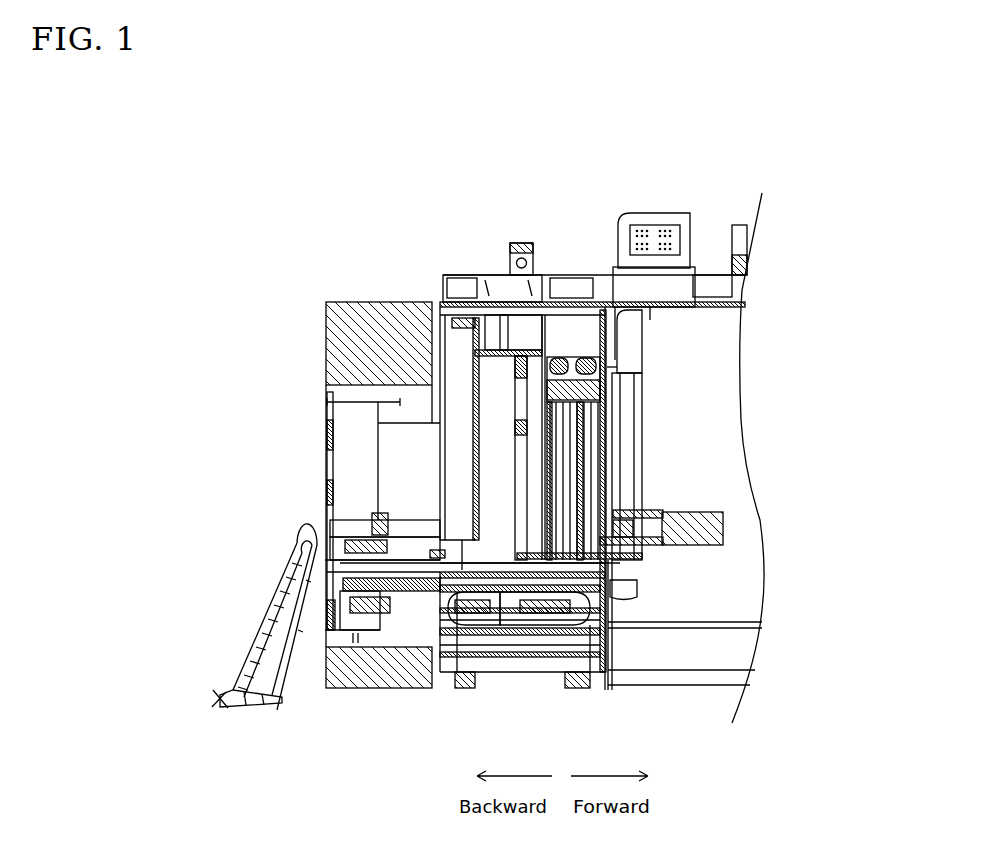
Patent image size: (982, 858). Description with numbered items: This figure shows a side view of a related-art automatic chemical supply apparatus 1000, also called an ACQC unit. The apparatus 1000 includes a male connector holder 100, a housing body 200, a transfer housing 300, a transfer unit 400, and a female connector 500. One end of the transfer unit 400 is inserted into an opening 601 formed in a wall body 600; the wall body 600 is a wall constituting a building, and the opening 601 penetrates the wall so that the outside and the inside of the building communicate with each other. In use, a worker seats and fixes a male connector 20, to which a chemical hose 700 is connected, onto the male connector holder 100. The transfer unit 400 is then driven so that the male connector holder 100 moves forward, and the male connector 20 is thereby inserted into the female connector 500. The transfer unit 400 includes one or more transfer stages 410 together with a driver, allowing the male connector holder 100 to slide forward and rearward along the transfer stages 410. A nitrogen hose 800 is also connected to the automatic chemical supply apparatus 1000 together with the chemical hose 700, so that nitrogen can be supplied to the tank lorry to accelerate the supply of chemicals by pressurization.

The automatic chemical supply apparatus 1000 is at (330, 176).
The transfer housing 300 is at (502, 278).
The housing body 200 is at (705, 268).
The opening 601 is at (327, 410).
The male connector 20 is at (397, 520).
The male connector holder 100 is at (297, 543).
The chemical hose 700 is at (263, 623).
The nitrogen hose 800 is at (277, 708).
The wall body 600 is at (404, 680).
The transfer unit 400 is at (411, 596).
The transfer stages 410 is at (512, 577).
The female connector 500 is at (690, 533).